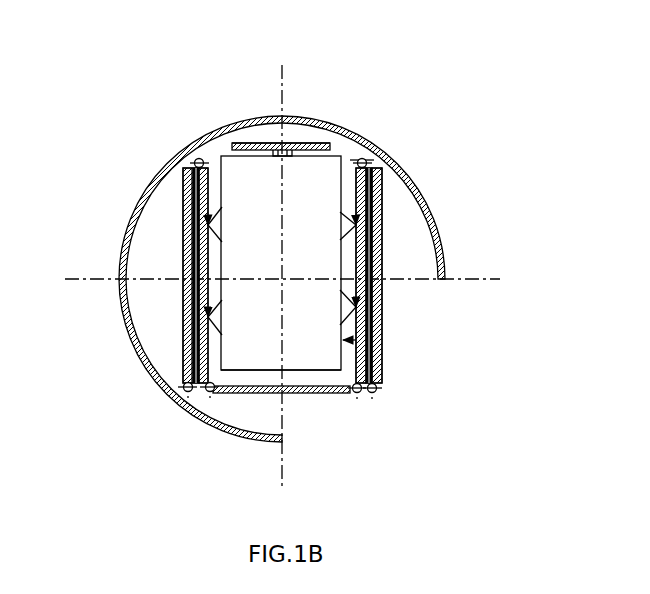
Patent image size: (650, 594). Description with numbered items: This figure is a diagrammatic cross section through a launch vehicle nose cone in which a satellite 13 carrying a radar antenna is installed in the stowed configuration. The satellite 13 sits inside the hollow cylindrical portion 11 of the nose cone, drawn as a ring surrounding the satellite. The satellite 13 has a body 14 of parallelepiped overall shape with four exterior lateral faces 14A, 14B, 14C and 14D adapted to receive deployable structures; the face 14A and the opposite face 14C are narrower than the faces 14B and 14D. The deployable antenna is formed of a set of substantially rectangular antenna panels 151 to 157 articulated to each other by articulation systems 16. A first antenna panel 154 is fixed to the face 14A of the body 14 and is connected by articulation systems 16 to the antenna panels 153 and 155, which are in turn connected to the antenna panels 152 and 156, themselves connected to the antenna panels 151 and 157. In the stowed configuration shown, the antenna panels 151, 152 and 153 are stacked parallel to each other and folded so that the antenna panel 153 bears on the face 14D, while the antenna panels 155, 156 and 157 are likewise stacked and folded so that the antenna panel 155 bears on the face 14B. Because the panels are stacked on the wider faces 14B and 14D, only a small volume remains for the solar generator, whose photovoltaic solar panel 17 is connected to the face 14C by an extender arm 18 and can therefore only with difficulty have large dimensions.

The hollow cylindrical portion 11 is at (420, 200).
The satellite 13 is at (456, 410).
The body 14 is at (356, 150).
The face 14A is at (308, 378).
The face 14B is at (382, 347).
The face 14C is at (300, 148).
The face 14D is at (219, 250).
The articulation systems 16 is at (197, 160).
The photovoltaic solar panel 17 is at (313, 150).
The extender arm 18 is at (265, 147).
The antenna panel 151 is at (185, 287).
The antenna panel 152 is at (186, 332).
The antenna panel 153 is at (206, 197).
The first antenna panel 154 is at (242, 394).
The antenna panel 155 is at (382, 310).
The antenna panel 156 is at (382, 295).
The antenna panel 157 is at (377, 232).